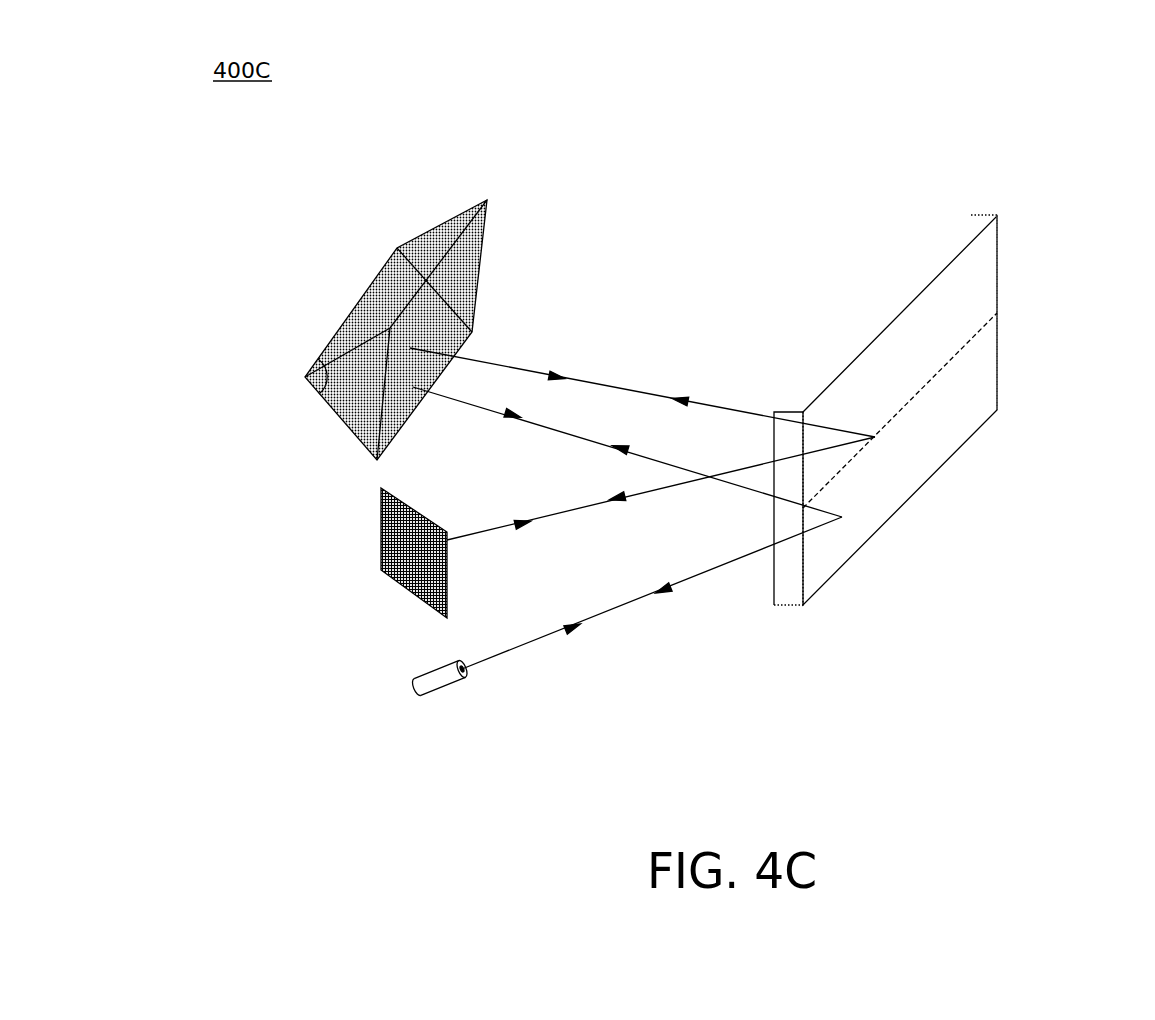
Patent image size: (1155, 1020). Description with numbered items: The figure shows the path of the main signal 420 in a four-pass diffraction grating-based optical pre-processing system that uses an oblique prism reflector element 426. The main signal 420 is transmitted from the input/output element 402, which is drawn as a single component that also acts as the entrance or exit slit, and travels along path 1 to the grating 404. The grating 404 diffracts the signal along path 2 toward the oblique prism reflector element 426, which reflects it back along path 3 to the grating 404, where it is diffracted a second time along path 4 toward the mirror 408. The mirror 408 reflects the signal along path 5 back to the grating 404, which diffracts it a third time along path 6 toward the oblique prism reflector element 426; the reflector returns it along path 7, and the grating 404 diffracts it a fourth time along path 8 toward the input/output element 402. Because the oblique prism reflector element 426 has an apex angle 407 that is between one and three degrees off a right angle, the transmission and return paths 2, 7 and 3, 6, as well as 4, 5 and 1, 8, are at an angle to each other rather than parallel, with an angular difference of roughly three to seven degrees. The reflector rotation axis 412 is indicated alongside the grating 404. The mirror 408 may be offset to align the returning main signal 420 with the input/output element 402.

The input/output element 402 is at (410, 687).
The grating 404 is at (990, 234).
The apex angle 407 is at (303, 378).
The mirror 408 is at (382, 572).
The reflector rotation axis 412 is at (985, 330).
The main signal 420 is at (730, 565).
The oblique prism reflector element 426 is at (488, 200).
The path segment one 1 is at (652, 596).
The path segment two 2 is at (627, 452).
The path segment three 3 is at (642, 383).
The path segment four 4 is at (637, 513).
The path segment five 5 is at (661, 504).
The path segment six 6 is at (701, 385).
The path segment seven 7 is at (489, 429).
The path segment eight 8 is at (684, 601).